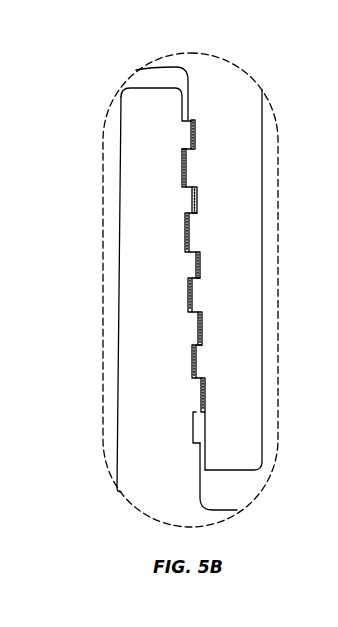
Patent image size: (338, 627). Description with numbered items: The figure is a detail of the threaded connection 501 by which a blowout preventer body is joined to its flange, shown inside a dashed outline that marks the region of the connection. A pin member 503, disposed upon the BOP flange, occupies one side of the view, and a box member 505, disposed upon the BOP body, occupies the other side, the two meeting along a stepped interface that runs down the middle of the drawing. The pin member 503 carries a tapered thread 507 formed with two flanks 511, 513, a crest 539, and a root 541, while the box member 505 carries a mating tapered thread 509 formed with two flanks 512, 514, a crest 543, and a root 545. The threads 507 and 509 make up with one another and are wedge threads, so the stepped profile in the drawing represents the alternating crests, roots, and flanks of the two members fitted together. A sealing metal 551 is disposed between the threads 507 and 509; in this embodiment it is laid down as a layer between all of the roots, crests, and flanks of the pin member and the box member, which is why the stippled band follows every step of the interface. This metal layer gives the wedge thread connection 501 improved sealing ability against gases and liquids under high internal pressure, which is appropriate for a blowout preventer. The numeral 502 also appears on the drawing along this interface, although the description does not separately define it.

The threaded connection 501 is at (118, 54).
The pin member 503 is at (173, 470).
The box member 505 is at (252, 106).
The tapered thread 507 is at (191, 133).
The tapered thread 509 is at (190, 162).
The sealing metal 551 is at (196, 200).
The contact segment 502 is at (196, 250).
The root 541 is at (188, 290).
The crest 543 is at (193, 311).
The root 545 is at (201, 328).
The crest 539 is at (198, 327).
The flank 511 is at (196, 343).
The flank 512 is at (200, 350).
The flank 513 is at (193, 385).
The flank 514 is at (203, 371).